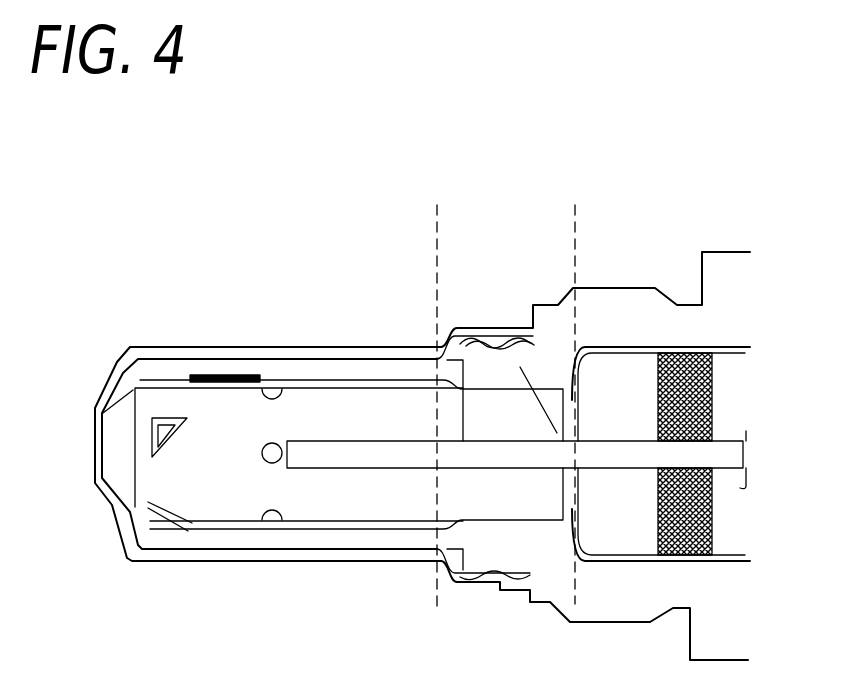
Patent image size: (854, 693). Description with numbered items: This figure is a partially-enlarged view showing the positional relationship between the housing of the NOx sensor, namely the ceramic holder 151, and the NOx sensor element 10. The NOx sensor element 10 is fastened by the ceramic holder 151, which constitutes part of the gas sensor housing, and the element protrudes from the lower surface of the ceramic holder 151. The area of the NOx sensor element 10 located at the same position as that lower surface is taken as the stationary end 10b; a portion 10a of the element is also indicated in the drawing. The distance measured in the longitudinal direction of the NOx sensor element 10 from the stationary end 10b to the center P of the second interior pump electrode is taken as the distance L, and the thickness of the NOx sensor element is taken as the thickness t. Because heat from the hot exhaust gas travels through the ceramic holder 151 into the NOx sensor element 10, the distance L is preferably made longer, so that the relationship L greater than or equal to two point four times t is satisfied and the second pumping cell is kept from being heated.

The NOx sensor element 10 is at (280, 467).
The terminal shaft 10a is at (304, 440).
The stationary end 10b is at (522, 345).
The ceramic holder 151 is at (617, 375).
The center of the second interior pump electrode P is at (432, 440).
The distance from the stationary end to the center P L is at (575, 220).
The thickness of the NOx sensor element t is at (765, 392).